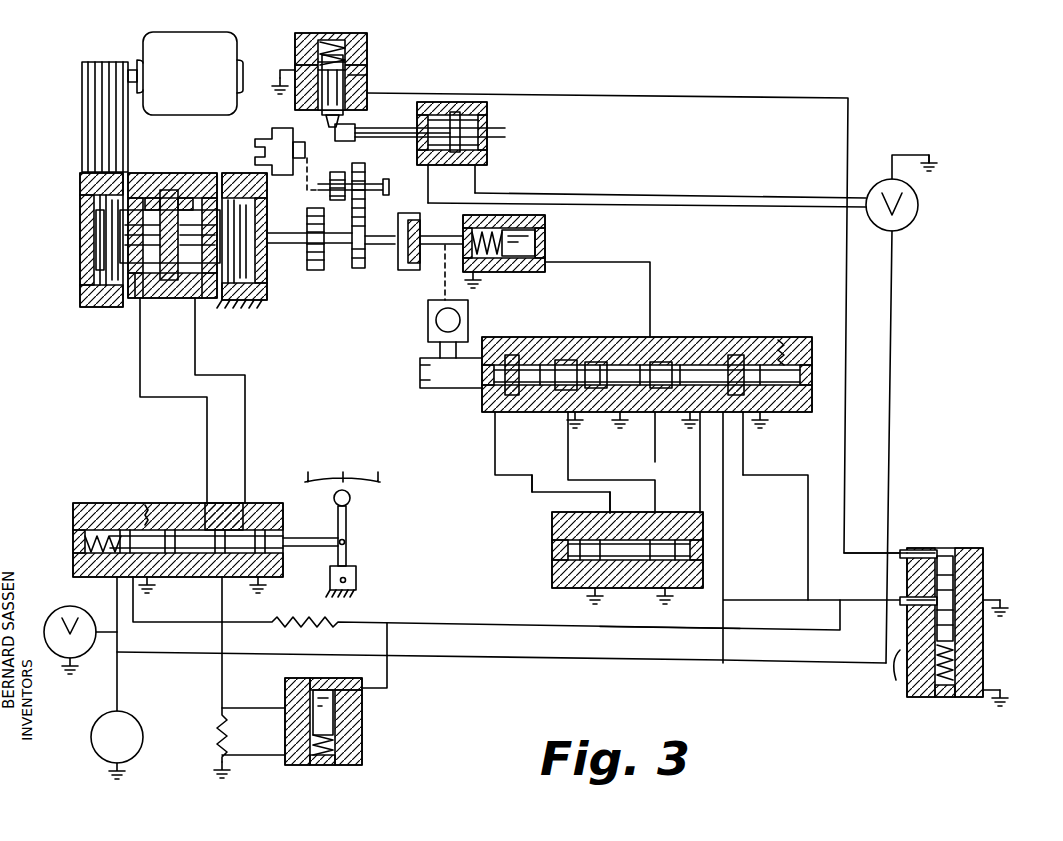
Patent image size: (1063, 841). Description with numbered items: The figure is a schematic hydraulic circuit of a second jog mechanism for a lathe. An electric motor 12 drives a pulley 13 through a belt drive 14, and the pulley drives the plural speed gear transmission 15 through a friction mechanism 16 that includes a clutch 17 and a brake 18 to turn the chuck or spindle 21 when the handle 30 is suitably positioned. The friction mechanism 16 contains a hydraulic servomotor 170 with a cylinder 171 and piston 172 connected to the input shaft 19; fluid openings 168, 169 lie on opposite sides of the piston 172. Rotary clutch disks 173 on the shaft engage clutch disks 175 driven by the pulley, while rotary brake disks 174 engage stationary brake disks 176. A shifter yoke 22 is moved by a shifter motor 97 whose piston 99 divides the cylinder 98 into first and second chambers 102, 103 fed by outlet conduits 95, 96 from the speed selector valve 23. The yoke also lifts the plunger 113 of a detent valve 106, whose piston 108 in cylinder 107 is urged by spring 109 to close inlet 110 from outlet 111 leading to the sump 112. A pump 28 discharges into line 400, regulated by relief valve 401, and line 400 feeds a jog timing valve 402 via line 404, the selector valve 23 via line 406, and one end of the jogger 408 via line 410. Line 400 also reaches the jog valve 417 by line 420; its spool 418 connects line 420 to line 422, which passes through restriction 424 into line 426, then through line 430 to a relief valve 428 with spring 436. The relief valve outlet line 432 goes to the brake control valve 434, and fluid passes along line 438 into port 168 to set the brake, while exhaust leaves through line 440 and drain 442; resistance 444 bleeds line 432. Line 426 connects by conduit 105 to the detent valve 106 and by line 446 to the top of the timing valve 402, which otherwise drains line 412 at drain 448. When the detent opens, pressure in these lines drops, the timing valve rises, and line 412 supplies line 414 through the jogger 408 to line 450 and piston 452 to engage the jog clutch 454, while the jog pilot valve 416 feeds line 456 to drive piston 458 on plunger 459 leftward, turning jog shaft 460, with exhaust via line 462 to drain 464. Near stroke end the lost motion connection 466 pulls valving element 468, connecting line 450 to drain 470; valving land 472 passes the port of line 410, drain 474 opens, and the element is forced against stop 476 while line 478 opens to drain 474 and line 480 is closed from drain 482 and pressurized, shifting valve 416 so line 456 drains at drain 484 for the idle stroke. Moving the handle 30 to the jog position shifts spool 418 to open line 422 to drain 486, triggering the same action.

The electric motor 12 is at (169, 34).
The belt drive 14 is at (82, 115).
The pulley 13 is at (80, 294).
The clutch disks 175 is at (100, 203).
The rotary clutch disks 173 is at (100, 238).
The clutch 17 is at (94, 260).
The friction mechanism 16 is at (168, 298).
The fluid opening 168 is at (144, 298).
The fluid opening 169 is at (199, 298).
The hydraulic servomotor 170 is at (175, 174).
The piston 172 is at (170, 190).
The cylinder 171 is at (190, 198).
The brake 18 is at (256, 255).
The rotary brake disks 174 is at (246, 270).
The brake disks 176 is at (236, 304).
The input shaft 19 is at (272, 233).
The plural speed gear transmission 15 is at (358, 268).
The shifter yoke 22 is at (345, 161).
The lathe spindle 21 is at (272, 132).
The detent valve 106 is at (367, 40).
The spring 109 is at (332, 40).
The piston 108 is at (314, 60).
The cylinder 107 is at (316, 69).
The inlet 110 is at (364, 80).
The sump 112 is at (280, 86).
The outlet 111 is at (320, 102).
The plunger 113 is at (328, 126).
The first chamber 102 is at (450, 141).
The shifter motor 97 is at (487, 146).
The second chamber 103 is at (487, 120).
The piston 99 is at (487, 155).
The cylinder 98 is at (430, 168).
The conduit 105 is at (807, 94).
The outlet conduit 95 is at (687, 194).
The outlet conduit 96 is at (672, 205).
The speed selector valve 23 is at (918, 207).
The line 406 is at (890, 310).
The jog clutch 454 is at (392, 216).
The piston 452 is at (545, 218).
The line 450 is at (607, 262).
The jog shaft 460 is at (442, 302).
The jogger 408 is at (648, 337).
The piston 458 is at (511, 355).
The plunger 459 is at (562, 360).
The lost motion connection 466 is at (598, 362).
The valving element 468 is at (674, 362).
The valving land 472 is at (734, 355).
The stop 476 is at (786, 332).
The drain 482 is at (772, 428).
The drain 470 is at (596, 426).
The line 462 is at (494, 460).
The line 456 is at (528, 482).
The line 478 is at (570, 493).
The drain 474 is at (655, 450).
The line 480 is at (750, 458).
The line 414 is at (804, 480).
The line 412 is at (743, 598).
The jog pilot valve 416 is at (552, 570).
The drain 484 is at (594, 598).
The drain 464 is at (664, 592).
The jog timing valve 402 is at (983, 560).
The line 446 is at (907, 547).
The drain 448 is at (1000, 598).
The line 404 is at (896, 680).
The line 438 is at (207, 426).
The line 440 is at (247, 408).
The jog valve 417 is at (86, 503).
The spool 418 is at (128, 504).
The brake control valve 434 is at (246, 512).
The drain 486 is at (155, 590).
The drain 442 is at (263, 591).
The handle 30 is at (350, 525).
The relief valve 401 is at (70, 610).
The line 420 is at (116, 598).
The pump 28 is at (130, 724).
The line 422 is at (155, 622).
The restriction 424 is at (338, 620).
The line 426 is at (430, 624).
The line 400 is at (145, 654).
The line 410 is at (730, 658).
The line 432 is at (226, 692).
The resistance 444 is at (220, 742).
The line 430 is at (388, 688).
The relief valve 428 is at (362, 762).
The spring 436 is at (362, 738).